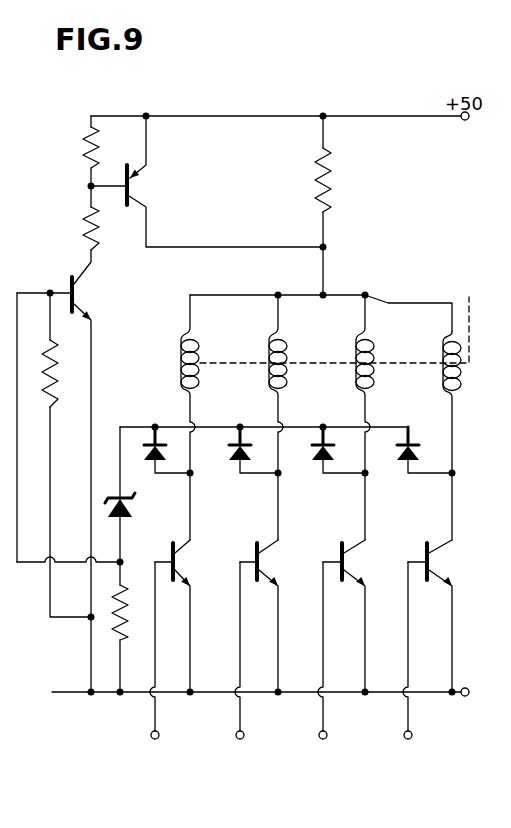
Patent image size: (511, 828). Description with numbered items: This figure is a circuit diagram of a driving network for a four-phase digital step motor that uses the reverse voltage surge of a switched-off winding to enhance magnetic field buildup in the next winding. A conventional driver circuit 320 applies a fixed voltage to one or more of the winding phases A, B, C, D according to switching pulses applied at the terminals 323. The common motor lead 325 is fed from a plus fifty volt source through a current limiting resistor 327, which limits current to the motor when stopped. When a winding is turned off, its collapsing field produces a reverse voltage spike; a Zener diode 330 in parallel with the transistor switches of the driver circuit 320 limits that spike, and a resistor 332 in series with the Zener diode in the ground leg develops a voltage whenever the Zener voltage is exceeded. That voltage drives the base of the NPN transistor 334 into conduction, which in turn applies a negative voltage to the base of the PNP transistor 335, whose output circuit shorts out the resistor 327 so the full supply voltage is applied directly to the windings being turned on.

The driver circuit 320 is at (334, 516).
The terminals 323 is at (235, 733).
The common motor lead 325 is at (302, 294).
The current limiting resistor 327 is at (314, 188).
The Zener diode 330 is at (131, 506).
The resistor 332 is at (122, 592).
The NPN transistor 334 is at (66, 290).
The PNP transistor 335 is at (143, 189).